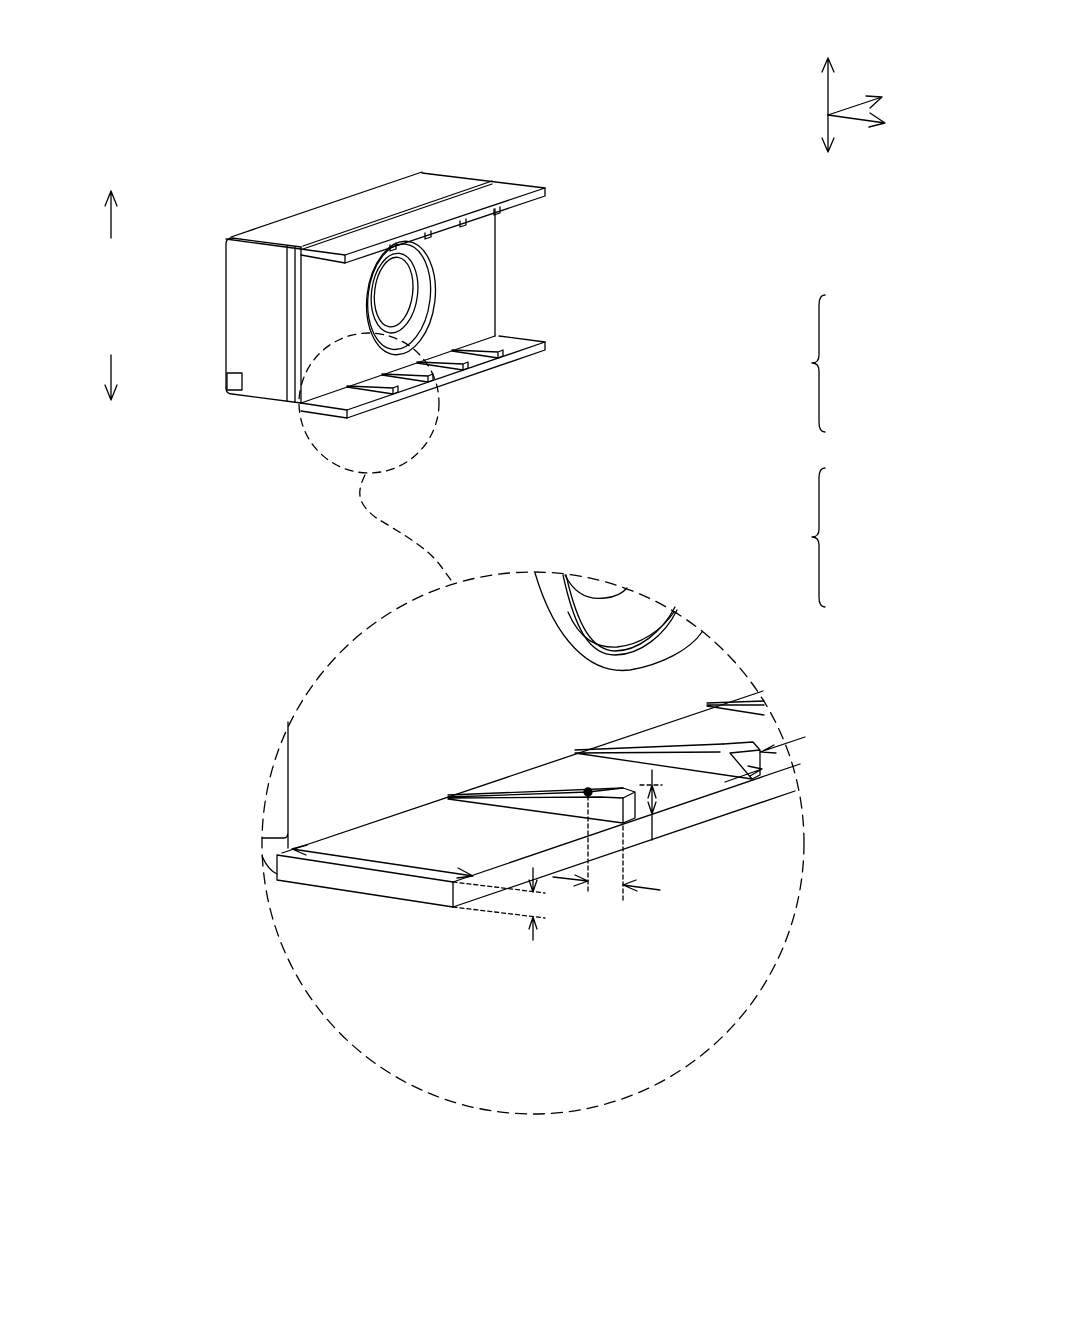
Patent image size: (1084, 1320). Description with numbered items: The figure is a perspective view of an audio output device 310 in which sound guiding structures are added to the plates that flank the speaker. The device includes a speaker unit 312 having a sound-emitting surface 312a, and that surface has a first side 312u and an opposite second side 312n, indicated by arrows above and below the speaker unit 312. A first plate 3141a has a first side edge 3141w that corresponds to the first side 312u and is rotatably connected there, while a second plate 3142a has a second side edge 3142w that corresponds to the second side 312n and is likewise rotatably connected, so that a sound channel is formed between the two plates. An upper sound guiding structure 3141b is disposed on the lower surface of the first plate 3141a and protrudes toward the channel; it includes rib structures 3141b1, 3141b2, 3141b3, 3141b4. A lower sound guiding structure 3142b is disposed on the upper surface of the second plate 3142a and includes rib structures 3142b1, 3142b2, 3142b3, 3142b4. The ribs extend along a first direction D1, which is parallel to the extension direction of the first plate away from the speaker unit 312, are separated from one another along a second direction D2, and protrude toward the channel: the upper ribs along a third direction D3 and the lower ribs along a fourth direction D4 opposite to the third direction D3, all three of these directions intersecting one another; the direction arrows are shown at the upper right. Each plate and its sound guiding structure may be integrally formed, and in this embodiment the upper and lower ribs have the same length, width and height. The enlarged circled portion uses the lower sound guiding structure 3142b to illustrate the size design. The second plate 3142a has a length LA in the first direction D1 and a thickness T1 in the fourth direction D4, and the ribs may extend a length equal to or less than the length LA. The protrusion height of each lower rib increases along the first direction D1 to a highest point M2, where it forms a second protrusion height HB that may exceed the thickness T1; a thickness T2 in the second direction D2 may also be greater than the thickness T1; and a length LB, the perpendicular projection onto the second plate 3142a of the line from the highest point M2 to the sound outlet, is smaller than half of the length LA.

The audio output device 310 is at (188, 25).
The speaker unit 312 is at (390, 284).
The sound-emitting surface 312a is at (404, 303).
The first side 312u is at (110, 199).
The second side 312n is at (110, 395).
The first plate 3141a is at (514, 190).
The first side edge 3141w is at (314, 245).
The upper sound guiding structure 3141b is at (824, 363).
The rib structure 3141b1 is at (393, 242).
The rib structure 3141b2 is at (428, 230).
The rib structure 3141b3 is at (466, 216).
The rib structure 3141b4 is at (500, 212).
The second plate 3142a is at (518, 341).
The second side edge 3142w is at (308, 413).
The lower sound guiding structure 3142b is at (824, 537).
The rib structure 3142b1 is at (396, 396).
The rib structure 3142b2 is at (432, 384).
The rib structure 3142b3 is at (466, 370).
The rib structure 3142b4 is at (500, 358).
The highest point M2 is at (586, 790).
The thickness T1 is at (516, 904).
The thickness T2 is at (768, 770).
The length LA is at (382, 853).
The length LB is at (605, 892).
The second protrusion height HB is at (657, 800).
The first direction D1 is at (871, 128).
The second direction D2 is at (871, 96).
The third direction D3 is at (828, 147).
The fourth direction D4 is at (828, 70).